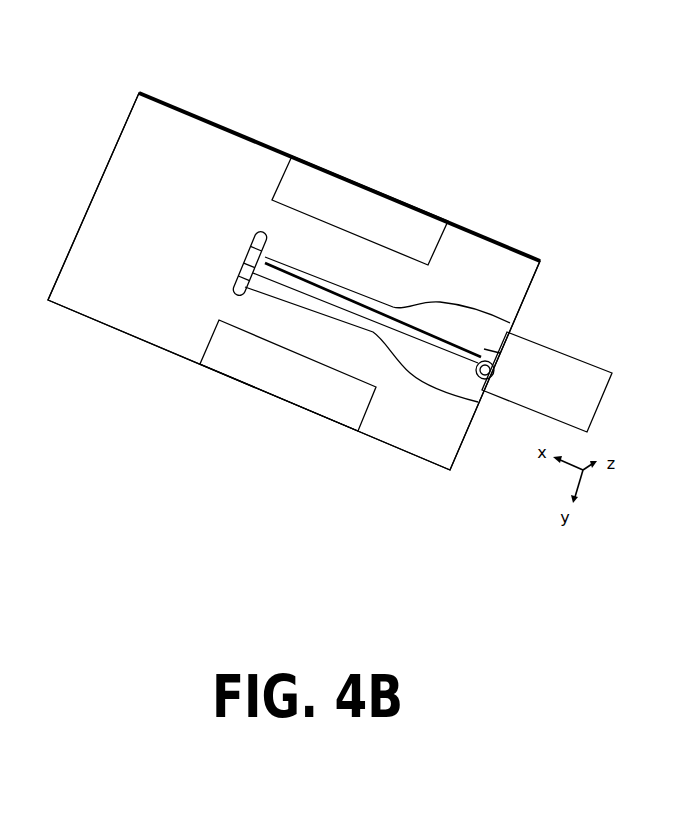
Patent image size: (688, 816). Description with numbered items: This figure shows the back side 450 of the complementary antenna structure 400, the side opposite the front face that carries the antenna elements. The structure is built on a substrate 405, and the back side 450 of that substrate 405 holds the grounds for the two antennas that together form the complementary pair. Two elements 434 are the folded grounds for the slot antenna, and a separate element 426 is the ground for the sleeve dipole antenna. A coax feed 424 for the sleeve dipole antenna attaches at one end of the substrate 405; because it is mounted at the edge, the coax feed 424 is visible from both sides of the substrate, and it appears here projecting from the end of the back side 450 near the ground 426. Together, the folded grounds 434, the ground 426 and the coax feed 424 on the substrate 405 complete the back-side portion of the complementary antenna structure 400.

The complementary antenna structure 400 is at (144, 397).
The substrate 405 is at (483, 232).
The coax feed 424 is at (547, 357).
The ground for the sleeve dipole antenna 426 is at (460, 390).
The folded grounds 434 is at (321, 215).
The back side 450 is at (138, 95).